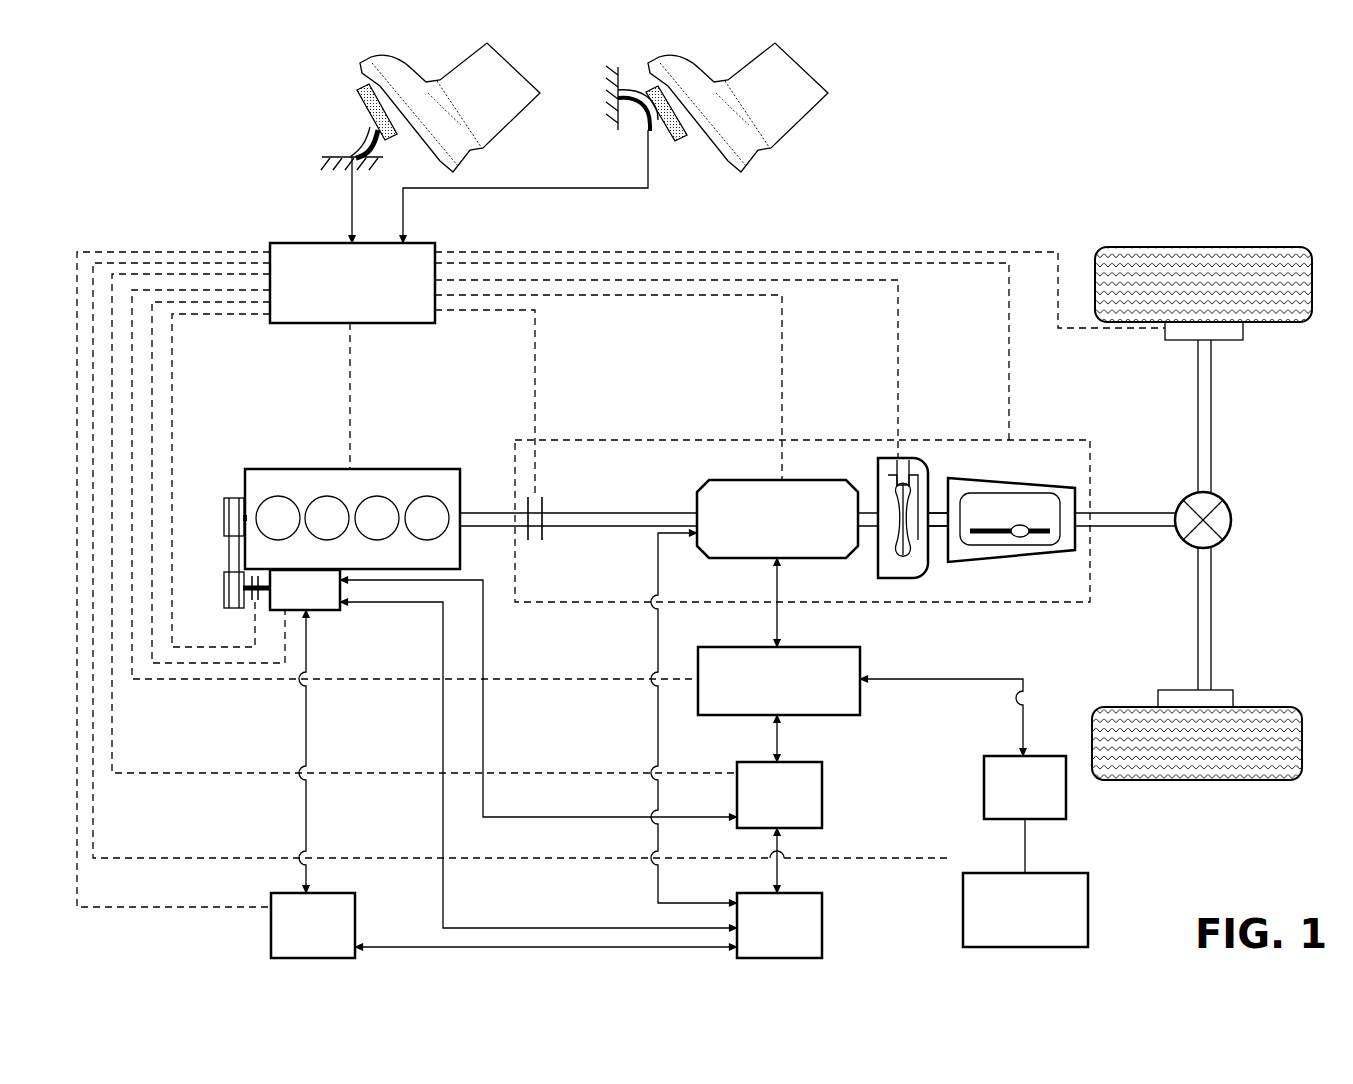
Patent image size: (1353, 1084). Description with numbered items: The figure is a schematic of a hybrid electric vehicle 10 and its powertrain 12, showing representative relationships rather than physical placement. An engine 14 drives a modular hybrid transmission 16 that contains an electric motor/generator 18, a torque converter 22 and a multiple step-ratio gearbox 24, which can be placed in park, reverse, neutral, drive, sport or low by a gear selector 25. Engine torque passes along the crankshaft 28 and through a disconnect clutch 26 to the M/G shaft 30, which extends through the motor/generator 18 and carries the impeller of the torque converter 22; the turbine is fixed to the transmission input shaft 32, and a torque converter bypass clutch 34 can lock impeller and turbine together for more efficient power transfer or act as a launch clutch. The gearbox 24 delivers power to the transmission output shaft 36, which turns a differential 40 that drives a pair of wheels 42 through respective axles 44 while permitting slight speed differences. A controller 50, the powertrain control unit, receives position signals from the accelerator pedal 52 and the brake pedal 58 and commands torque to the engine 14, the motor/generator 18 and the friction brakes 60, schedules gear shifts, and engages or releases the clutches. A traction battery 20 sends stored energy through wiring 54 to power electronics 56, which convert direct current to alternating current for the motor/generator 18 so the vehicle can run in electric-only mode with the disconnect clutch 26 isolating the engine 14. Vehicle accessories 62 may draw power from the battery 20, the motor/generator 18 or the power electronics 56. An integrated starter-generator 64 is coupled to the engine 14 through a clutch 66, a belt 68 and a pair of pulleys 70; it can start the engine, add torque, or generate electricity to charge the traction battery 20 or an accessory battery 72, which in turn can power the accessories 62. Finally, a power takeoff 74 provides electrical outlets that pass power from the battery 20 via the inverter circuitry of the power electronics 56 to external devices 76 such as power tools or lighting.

The hybrid electric vehicle 10 is at (1117, 98).
The powertrain 12 is at (415, 722).
The engine 14 is at (300, 469).
The transmission 16 is at (852, 440).
The electric motor/generator 18 is at (740, 480).
The traction battery 20 is at (822, 790).
The torque converter 22 is at (905, 578).
The gearbox 24 is at (1010, 562).
The gear selector 25 is at (1025, 493).
The disconnect clutch 26 is at (545, 505).
The crankshaft 28 is at (250, 510).
The M/G shaft 30 is at (655, 513).
The transmission input shaft 32 is at (938, 513).
The torque converter bypass clutch 34 is at (905, 458).
The transmission output shaft 36 is at (1120, 513).
The differential 40 is at (1231, 520).
The wheels 42 is at (1198, 247).
The axles 44 is at (1211, 405).
The controller 50 is at (305, 243).
The accelerator pedal 52 is at (365, 105).
The wiring 54 is at (775, 740).
The power electronics 56 is at (865, 715).
The brake pedal 58 is at (690, 140).
The friction brakes 60 is at (1243, 330).
The vehicle accessories 62 is at (822, 925).
The integrated starter-generator 64 is at (320, 612).
The clutch 66 is at (255, 600).
The belt 68 is at (229, 560).
The pulleys 70 is at (224, 518).
The accessory battery 72 is at (355, 922).
The power takeoff 74 is at (1066, 790).
The external devices 76 is at (1088, 912).